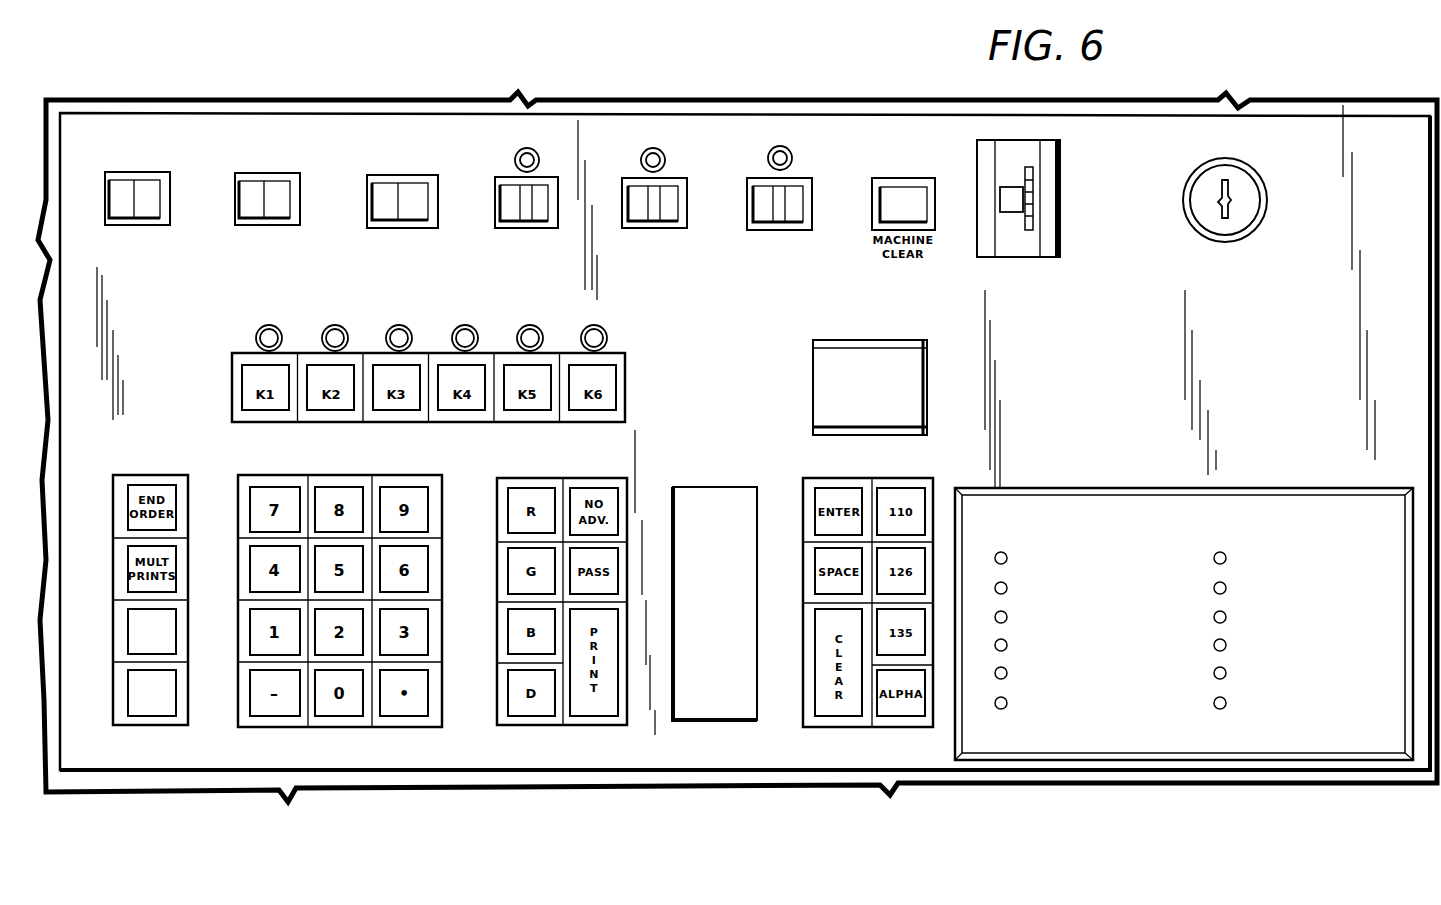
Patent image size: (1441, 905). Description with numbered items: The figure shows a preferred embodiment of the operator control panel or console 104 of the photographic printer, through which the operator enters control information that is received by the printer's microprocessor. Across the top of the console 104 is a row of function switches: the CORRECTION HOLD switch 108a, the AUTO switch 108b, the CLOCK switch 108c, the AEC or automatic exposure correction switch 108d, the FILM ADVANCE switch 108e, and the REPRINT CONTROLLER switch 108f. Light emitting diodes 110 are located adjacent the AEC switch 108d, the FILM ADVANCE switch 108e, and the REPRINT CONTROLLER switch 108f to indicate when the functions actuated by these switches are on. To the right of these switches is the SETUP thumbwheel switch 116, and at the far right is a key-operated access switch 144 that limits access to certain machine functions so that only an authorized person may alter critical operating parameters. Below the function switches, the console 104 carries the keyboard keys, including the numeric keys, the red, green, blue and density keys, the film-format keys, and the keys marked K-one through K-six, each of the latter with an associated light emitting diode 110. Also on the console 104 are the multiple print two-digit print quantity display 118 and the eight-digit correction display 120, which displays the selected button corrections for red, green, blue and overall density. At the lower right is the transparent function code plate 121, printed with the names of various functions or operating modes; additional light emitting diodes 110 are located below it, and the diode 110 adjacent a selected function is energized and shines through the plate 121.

The control panel or console 104 is at (518, 800).
The CORRECTION HOLD switch 108a is at (178, 165).
The AUTO switch 108b is at (280, 190).
The CLOCK switch 108c is at (408, 192).
The AEC switch 108d is at (512, 215).
The FILM ADVANCE switch 108e is at (637, 217).
The REPRINT CONTROLLER switch 108f is at (760, 215).
The light emitting diodes 110 is at (548, 140).
The SETUP thumbwheel switch 116 is at (1062, 202).
The multiple print two-digit print quantity display 118 is at (865, 357).
The eight-digit correction display 120 is at (718, 498).
The transparent function code plate 121 is at (1250, 502).
The access key switch 144 is at (1242, 187).